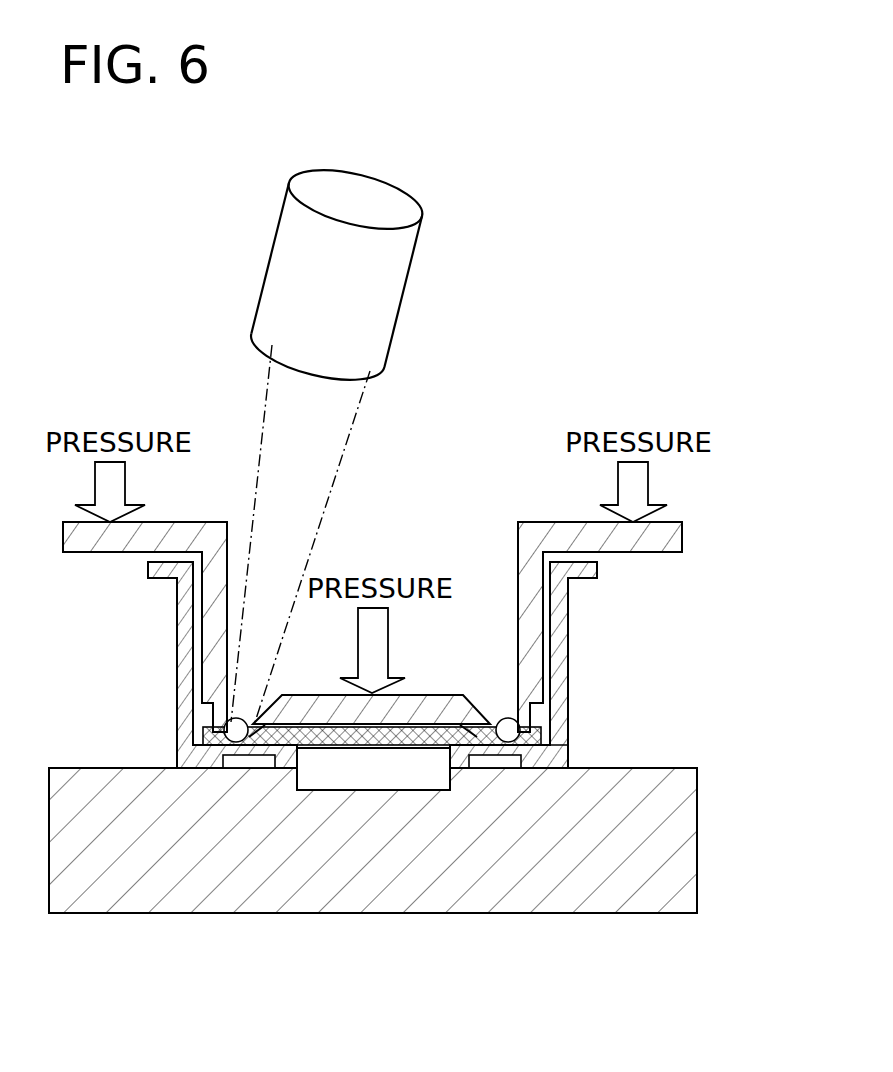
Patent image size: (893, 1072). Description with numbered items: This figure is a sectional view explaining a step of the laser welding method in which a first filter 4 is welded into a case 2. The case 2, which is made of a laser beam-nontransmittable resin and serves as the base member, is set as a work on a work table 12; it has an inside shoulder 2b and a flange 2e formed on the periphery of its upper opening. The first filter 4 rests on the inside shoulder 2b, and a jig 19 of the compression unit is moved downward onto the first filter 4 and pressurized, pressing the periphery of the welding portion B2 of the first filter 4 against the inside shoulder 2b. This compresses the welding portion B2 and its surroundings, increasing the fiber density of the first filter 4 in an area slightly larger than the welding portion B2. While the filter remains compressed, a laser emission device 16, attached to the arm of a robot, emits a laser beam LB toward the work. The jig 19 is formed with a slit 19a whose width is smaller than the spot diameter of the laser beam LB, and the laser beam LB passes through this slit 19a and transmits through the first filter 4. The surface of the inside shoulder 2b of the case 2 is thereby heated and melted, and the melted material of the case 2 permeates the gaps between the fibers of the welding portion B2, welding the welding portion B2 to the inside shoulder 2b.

The case 2 is at (568, 663).
The inside shoulder 2b is at (197, 740).
The flange 2e is at (148, 570).
The first filter 4 is at (427, 722).
The work table 12 is at (685, 828).
The laser emission device 16 is at (390, 277).
The jig 19 is at (683, 543).
The slit 19a is at (220, 730).
The welding portion B2 is at (177, 731).
The laser beam LB is at (328, 493).